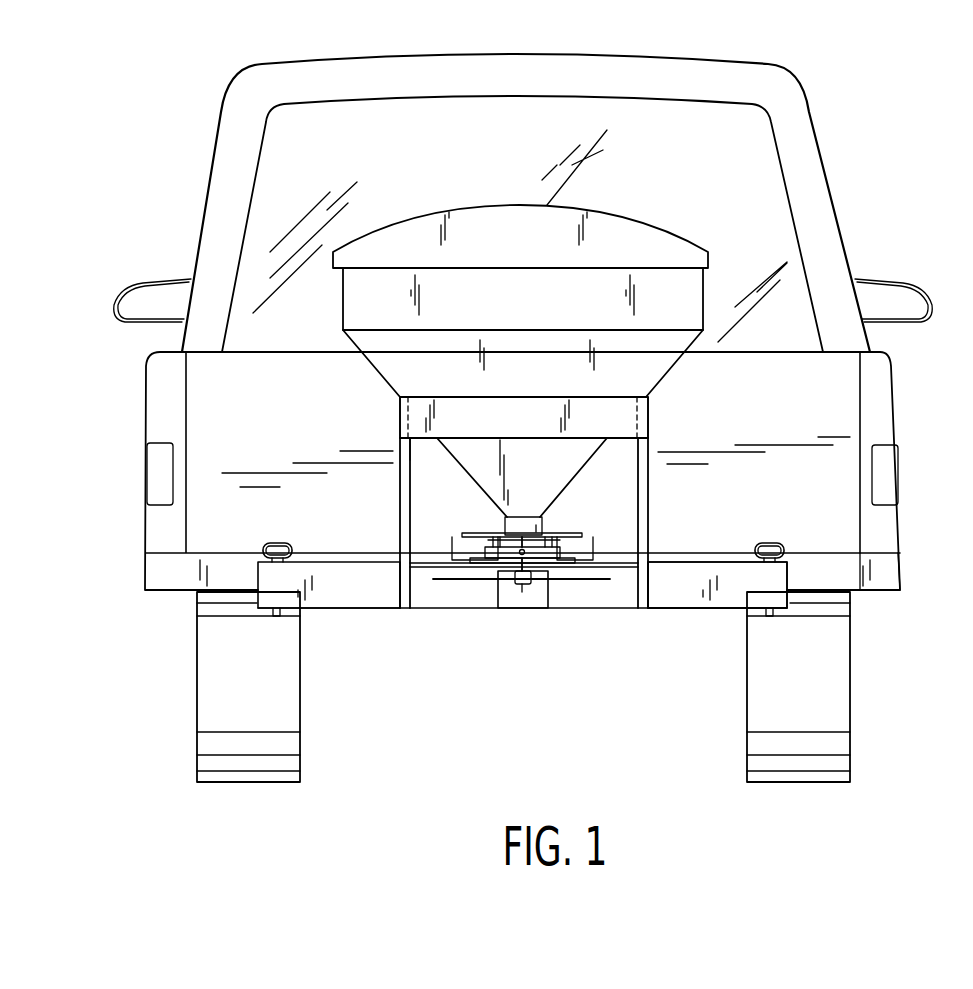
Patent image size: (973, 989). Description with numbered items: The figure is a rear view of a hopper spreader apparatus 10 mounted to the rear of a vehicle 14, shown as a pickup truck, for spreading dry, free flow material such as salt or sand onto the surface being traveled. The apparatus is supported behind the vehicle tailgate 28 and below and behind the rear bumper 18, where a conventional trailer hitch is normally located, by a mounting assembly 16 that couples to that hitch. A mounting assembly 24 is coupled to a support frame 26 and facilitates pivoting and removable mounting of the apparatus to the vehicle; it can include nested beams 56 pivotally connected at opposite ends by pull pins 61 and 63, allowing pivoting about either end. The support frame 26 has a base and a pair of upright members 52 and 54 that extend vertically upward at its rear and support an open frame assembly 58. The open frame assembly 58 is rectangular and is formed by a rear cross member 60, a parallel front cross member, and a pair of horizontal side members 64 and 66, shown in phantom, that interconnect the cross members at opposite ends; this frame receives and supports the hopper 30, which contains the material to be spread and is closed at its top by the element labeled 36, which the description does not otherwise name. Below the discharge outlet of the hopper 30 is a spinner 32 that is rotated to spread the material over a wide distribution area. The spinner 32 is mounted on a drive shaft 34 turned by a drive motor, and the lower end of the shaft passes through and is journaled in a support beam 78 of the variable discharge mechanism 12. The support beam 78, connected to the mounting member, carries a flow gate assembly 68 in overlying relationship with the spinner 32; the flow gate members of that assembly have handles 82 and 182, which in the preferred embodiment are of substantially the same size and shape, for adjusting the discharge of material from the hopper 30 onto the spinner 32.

The hopper spreader apparatus 10 is at (700, 223).
The variable discharge mechanism 12 is at (462, 573).
The vehicle 14 is at (838, 208).
The mounting assembly 16 is at (675, 547).
The rear bumper 18 is at (895, 575).
The mounting assembly 24 is at (684, 583).
The support frame 26 is at (398, 428).
The vehicle tailgate 28 is at (853, 387).
The hopper 30 is at (685, 307).
The spinner 32 is at (565, 562).
The drive shaft 34 is at (522, 590).
The hopper lid 36 is at (462, 212).
The upright member 52 is at (406, 497).
The upright member 54 is at (638, 495).
The nested beams 56 is at (697, 606).
The open frame assembly 58 is at (605, 413).
The rear cross member 60 is at (523, 410).
The pull pin 61 is at (268, 545).
The pull pin 63 is at (785, 543).
The horizontal side member 64 is at (397, 405).
The horizontal side member 66 is at (648, 418).
The flow gate assembly 68 is at (563, 520).
The support beam 78 is at (497, 598).
The handle 82 is at (467, 535).
The handle 182 is at (556, 536).